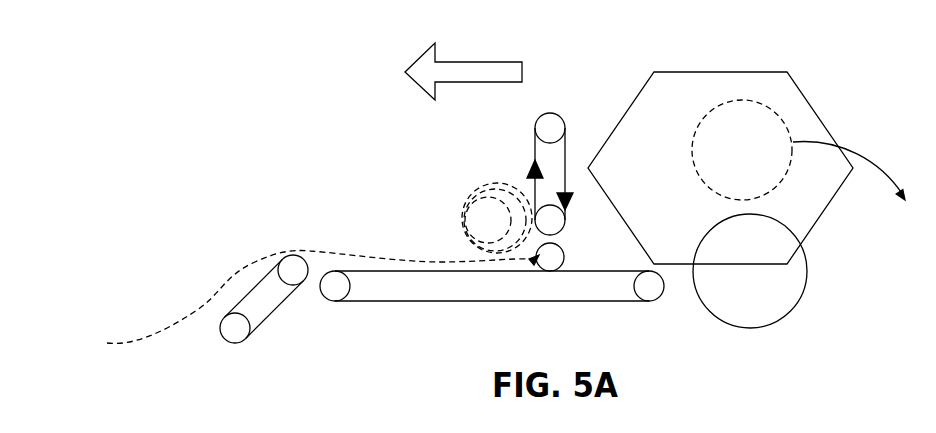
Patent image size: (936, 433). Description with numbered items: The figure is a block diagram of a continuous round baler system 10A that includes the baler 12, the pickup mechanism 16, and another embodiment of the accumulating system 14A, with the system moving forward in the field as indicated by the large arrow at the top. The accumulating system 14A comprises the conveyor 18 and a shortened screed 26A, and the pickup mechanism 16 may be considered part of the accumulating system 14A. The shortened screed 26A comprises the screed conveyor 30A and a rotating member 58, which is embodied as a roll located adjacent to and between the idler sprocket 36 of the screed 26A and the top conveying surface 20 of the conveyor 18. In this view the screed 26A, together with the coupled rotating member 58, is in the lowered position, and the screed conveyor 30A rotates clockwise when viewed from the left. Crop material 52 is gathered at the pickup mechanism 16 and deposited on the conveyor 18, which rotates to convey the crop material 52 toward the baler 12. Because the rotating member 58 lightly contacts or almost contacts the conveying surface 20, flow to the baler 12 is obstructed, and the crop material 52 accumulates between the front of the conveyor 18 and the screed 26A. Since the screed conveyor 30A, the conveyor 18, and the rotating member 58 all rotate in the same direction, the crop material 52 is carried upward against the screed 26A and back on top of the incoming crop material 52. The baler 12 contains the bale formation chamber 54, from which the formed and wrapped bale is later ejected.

The continuous round baler system 10A is at (278, 113).
The baler 12 is at (746, 180).
The accumulating system 14A is at (392, 192).
The pickup mechanism 16 is at (273, 310).
The conveyor 18 is at (492, 298).
The conveying surface 20 is at (585, 270).
The shortened screed 26A is at (546, 141).
The screed conveyor 30A is at (565, 173).
The idler sprocket 36 is at (565, 220).
The crop material 52 is at (350, 255).
The bale formation chamber 54 is at (773, 100).
The rotating member 58 is at (563, 258).